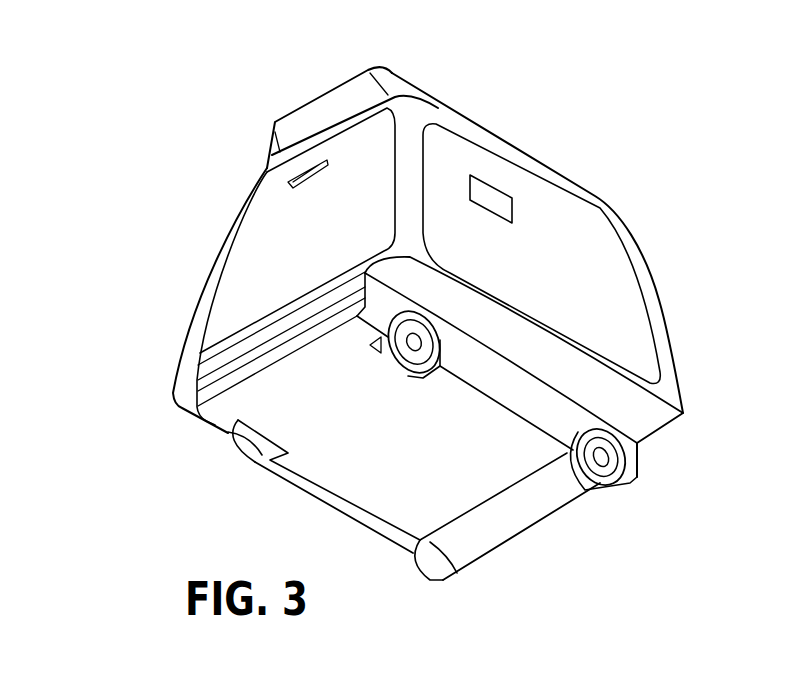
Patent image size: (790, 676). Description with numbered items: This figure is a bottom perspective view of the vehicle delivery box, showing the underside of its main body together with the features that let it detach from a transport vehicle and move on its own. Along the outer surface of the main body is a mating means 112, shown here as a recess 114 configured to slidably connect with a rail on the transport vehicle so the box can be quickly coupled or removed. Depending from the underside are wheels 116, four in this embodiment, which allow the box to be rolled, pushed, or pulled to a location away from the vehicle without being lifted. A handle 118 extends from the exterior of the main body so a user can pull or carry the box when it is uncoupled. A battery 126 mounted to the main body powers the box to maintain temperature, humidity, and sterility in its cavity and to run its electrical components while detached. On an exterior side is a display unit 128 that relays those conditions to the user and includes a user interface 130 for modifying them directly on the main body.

The mating means 112 is at (367, 275).
The recess 114 is at (430, 246).
The wheel 116 is at (603, 473).
The handle 118 is at (283, 122).
The battery 126 is at (527, 517).
The display unit 128 is at (533, 226).
The user interface 130 is at (510, 207).